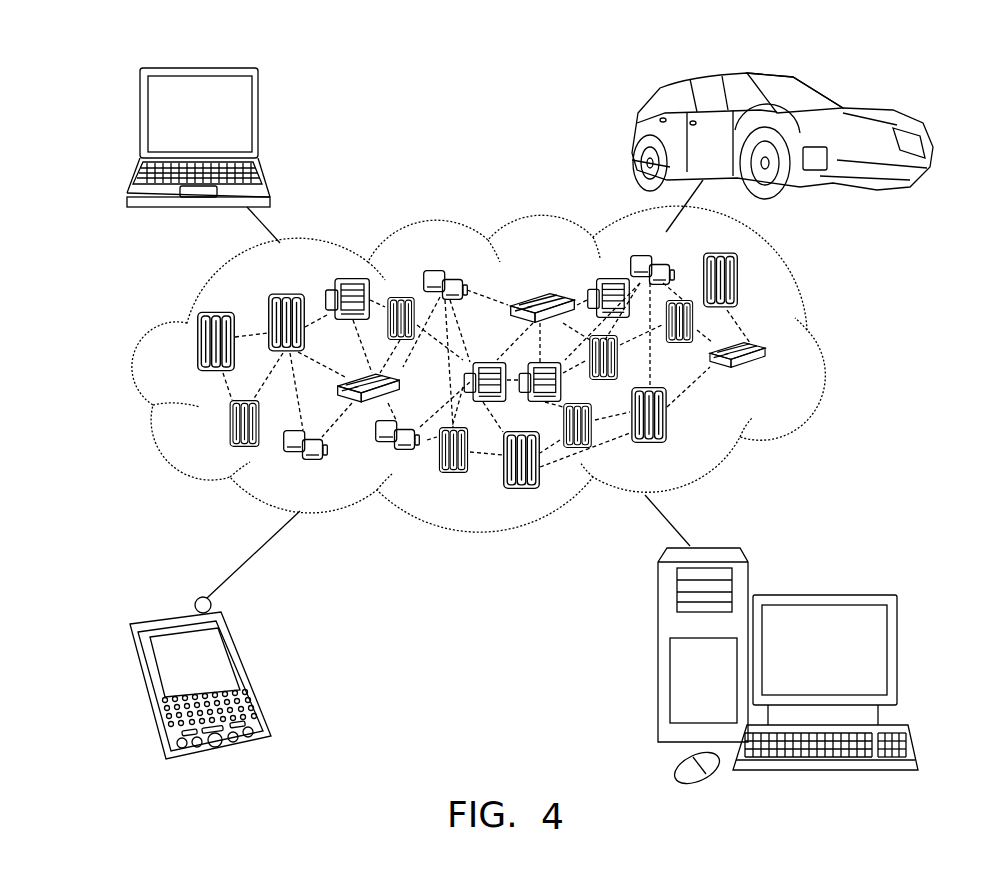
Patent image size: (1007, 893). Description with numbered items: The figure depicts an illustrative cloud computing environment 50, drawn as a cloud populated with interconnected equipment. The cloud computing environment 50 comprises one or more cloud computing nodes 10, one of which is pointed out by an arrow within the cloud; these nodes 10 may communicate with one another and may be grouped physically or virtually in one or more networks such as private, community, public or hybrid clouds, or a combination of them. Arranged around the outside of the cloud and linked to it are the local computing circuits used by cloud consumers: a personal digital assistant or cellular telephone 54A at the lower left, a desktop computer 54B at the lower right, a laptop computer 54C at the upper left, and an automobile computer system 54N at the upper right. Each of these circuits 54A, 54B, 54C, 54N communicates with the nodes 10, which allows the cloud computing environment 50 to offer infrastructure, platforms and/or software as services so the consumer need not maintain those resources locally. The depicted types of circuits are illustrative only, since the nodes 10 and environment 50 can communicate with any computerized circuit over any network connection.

The cloud computing environment 50 is at (827, 352).
The cloud computing nodes 10 is at (784, 380).
The personal digital assistant (PDA) or cellular telephone 54A is at (247, 677).
The desktop computer 54B is at (820, 595).
The laptop computer 54C is at (258, 122).
The automobile computer system 54N is at (638, 140).